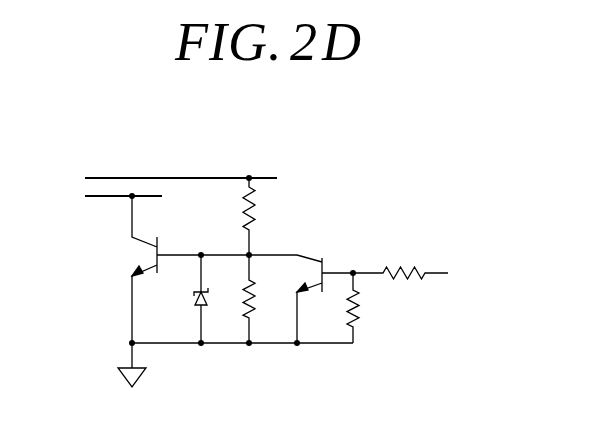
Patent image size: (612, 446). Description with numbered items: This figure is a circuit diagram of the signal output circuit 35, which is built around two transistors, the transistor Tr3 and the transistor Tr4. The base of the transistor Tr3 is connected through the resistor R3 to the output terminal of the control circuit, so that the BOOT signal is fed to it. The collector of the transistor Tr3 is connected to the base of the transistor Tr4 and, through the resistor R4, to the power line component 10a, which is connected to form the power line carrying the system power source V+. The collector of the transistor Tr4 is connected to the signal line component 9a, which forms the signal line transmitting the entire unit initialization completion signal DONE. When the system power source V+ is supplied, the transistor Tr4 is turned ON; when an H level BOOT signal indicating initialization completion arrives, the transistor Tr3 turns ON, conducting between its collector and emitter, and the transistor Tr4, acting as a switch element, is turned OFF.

The power line component 10a is at (104, 178).
The signal line component 9a is at (103, 196).
The signal output circuit 35 is at (348, 157).
The transistor Tr4 is at (157, 269).
The transistor Tr3 is at (322, 284).
The resistor R4 is at (266, 216).
The resistor R3 is at (400, 257).